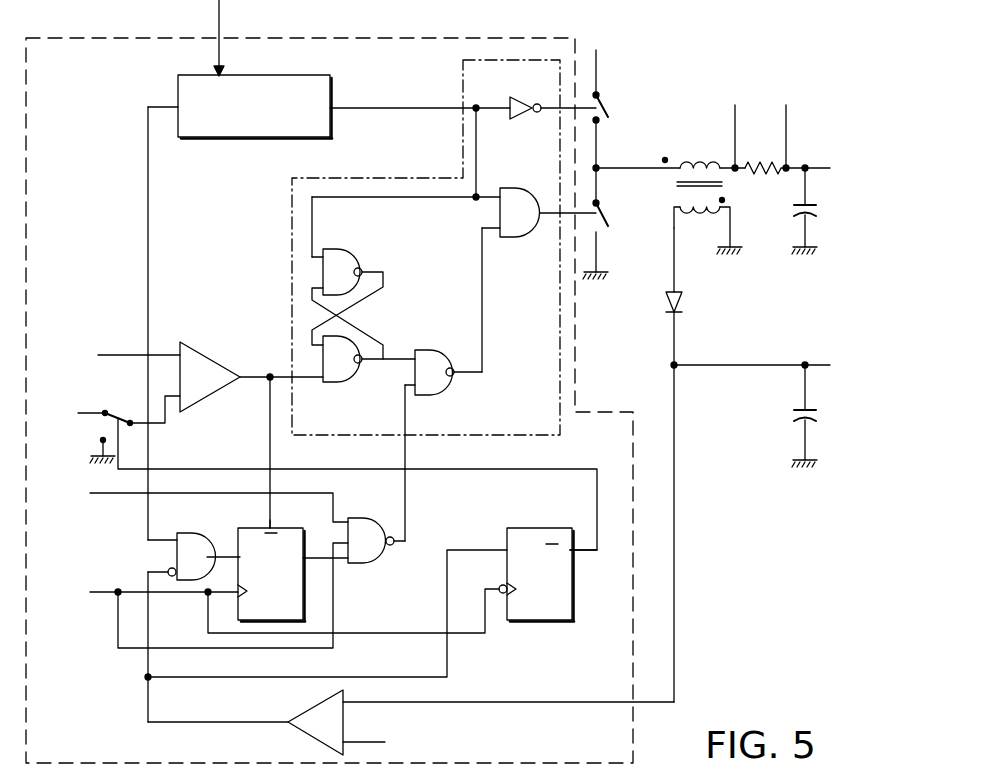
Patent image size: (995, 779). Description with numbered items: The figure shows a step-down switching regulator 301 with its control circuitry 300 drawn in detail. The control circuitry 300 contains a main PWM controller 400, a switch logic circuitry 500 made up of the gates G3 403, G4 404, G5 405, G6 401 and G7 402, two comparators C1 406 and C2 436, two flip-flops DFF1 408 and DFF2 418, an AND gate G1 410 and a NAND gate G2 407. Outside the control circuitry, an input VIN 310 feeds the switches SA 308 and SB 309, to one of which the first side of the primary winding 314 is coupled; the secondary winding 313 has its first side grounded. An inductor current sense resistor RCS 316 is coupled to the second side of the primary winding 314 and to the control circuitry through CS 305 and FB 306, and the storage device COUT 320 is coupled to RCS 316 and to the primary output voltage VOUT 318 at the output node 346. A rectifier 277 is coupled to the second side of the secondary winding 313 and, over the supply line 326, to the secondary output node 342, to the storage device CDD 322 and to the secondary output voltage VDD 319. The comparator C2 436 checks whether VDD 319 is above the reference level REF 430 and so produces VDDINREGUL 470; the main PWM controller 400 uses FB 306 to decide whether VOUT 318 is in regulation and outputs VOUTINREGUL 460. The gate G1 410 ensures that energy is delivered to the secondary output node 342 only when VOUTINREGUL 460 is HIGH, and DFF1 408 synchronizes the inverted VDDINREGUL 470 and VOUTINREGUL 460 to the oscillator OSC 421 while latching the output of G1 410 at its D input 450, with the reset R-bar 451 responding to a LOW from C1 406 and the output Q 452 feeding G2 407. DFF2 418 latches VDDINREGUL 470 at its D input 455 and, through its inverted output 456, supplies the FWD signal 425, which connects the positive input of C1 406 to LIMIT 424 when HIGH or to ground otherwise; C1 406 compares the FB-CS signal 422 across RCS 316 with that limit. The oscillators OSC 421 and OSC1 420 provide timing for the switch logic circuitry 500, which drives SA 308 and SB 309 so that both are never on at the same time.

The control circuitry 300 is at (468, 42).
The step-down switching regulator 301 is at (735, 628).
The CS 305 is at (735, 105).
The FB 306 is at (786, 105).
The switch SA 308 is at (606, 122).
The switch SB 309 is at (606, 233).
The input voltage VIN 310 is at (628, 66).
The secondary winding 313 is at (694, 216).
The primary winding 314 is at (694, 160).
The inductor current sense resistor RCS 316 is at (762, 162).
The primary output voltage VOUT 318 is at (830, 182).
The secondary output voltage VDD 319 is at (848, 367).
The storage device COUT 320 is at (820, 210).
The storage device CDD 322 is at (820, 424).
The VDD supply line 326 is at (676, 537).
The secondary output node 342 is at (805, 362).
The output node 346 is at (805, 165).
The rectifier 277 is at (688, 302).
The main PWM controller 400 is at (178, 86).
The gate G6 401 is at (524, 118).
The gate G7 402 is at (520, 240).
The gate G3 403 is at (368, 250).
The gate G4 404 is at (345, 383).
The gate G5 405 is at (455, 348).
The comparator C1 406 is at (213, 403).
The NAND gate G2 407 is at (384, 558).
The flip-flop DFF1 408 is at (303, 608).
The AND gate G1 410 is at (202, 536).
The flip-flop DFF2 418 is at (571, 603).
The oscillator OSC1 420 is at (191, 497).
The oscillator OSC 421 is at (267, 595).
The FB-CS signal 422 is at (122, 358).
The limit signal LIMIT 424 is at (106, 426).
The FWD signal 425 is at (357, 484).
The reference level REF 430 is at (396, 743).
The comparator C2 436 is at (305, 717).
The D input of DFF1 450 is at (240, 548).
The reset R-bar 451 is at (284, 538).
The output Q 452 is at (305, 566).
The D input of DFF2 455 is at (505, 548).
The inverted Q output of DFF2 456 is at (556, 533).
The VOUTINREGUL signal 460 is at (329, 316).
The VDDINREGUL signal 470 is at (206, 743).
The switch logic circuitry 500 is at (560, 433).